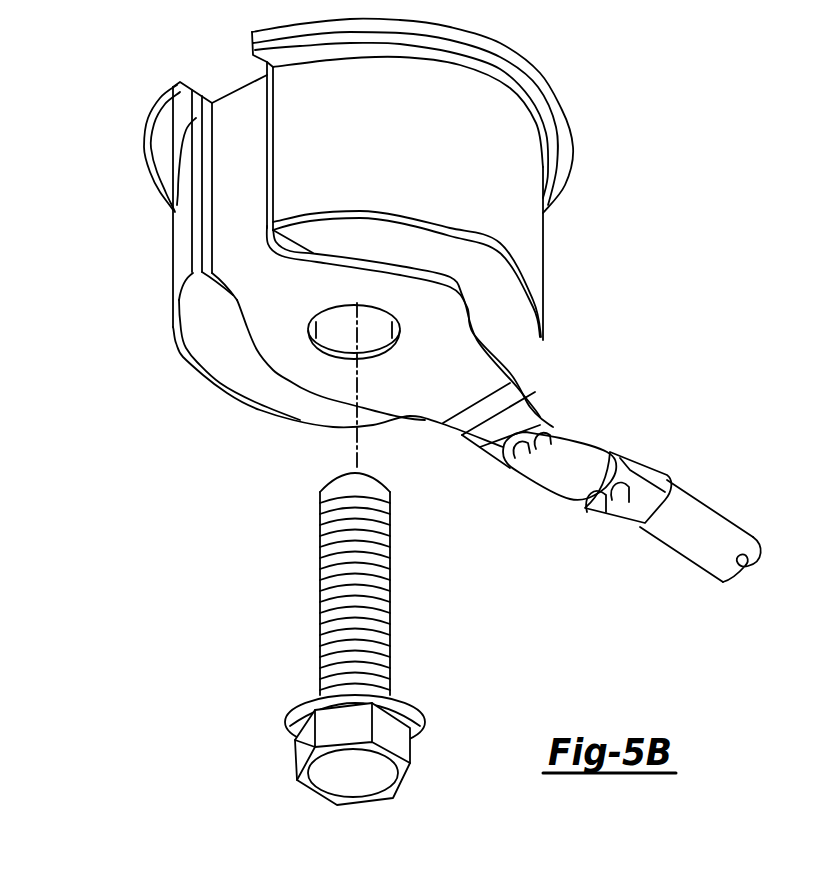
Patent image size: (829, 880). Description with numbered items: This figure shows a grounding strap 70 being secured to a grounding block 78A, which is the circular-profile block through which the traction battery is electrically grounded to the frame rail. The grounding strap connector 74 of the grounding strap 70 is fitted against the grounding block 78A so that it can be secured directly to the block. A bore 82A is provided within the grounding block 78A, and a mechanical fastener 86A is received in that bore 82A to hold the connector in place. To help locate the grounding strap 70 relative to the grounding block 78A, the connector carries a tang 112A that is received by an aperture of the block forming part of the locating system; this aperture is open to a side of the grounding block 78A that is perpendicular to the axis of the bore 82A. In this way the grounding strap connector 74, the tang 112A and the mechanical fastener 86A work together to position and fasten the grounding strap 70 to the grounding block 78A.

The grounding strap 70 is at (688, 522).
The grounding strap connector 74 is at (443, 333).
The grounding block 78A is at (500, 157).
The bore 82A is at (341, 362).
The mechanical fastener 86A is at (292, 765).
The tang 112A is at (232, 170).